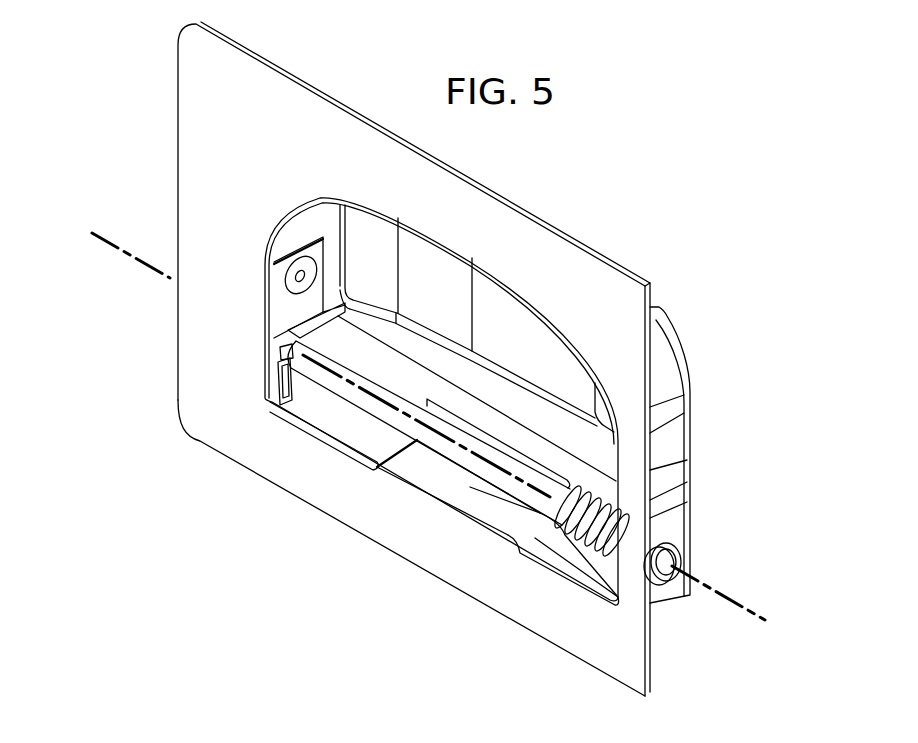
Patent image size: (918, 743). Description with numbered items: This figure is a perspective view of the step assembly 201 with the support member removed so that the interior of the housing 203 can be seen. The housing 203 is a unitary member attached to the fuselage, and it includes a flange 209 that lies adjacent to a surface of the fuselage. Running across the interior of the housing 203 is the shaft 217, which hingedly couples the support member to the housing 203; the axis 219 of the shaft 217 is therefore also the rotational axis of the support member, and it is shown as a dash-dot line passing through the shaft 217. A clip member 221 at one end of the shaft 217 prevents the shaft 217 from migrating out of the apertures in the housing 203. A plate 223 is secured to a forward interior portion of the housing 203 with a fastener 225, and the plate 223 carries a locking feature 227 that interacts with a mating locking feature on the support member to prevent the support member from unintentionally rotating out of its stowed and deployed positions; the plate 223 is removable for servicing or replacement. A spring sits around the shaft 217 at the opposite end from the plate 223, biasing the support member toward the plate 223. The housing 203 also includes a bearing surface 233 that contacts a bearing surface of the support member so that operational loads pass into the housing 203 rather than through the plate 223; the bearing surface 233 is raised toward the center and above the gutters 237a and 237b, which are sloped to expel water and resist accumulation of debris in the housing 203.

The step assembly 201 is at (106, 122).
The housing 203 is at (176, 208).
The flange 209 is at (437, 576).
The shaft 217 is at (343, 392).
The axis 219 is at (743, 603).
The clip member 221 is at (673, 540).
The plate 223 is at (320, 248).
The fastener 225 is at (293, 256).
The locking feature 227 is at (265, 374).
The bearing surface 233 is at (450, 482).
The gutter 237a is at (357, 437).
The gutter 237b is at (578, 568).